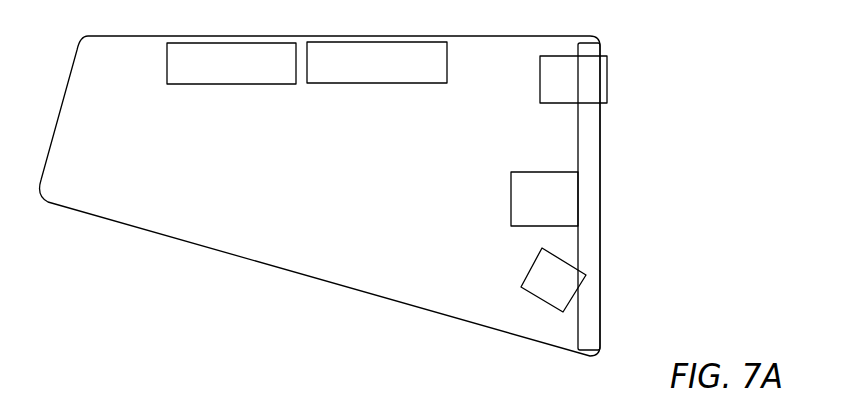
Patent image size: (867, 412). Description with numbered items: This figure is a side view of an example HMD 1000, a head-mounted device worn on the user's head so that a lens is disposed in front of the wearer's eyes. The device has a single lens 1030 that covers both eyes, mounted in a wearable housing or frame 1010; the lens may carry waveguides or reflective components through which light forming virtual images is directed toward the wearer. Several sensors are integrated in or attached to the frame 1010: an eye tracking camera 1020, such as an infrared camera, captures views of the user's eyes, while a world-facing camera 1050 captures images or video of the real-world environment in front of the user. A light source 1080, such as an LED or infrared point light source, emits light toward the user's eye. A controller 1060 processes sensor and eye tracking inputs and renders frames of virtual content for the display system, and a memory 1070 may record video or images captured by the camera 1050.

The HMD 1000 is at (695, 70).
The frame 1010 is at (135, 75).
The eye tracking camera 1020 is at (570, 210).
The lens 1030 is at (593, 312).
The world-facing camera 1050 is at (596, 88).
The controller 1060 is at (403, 73).
The memory 1070 is at (257, 73).
The light source 1080 is at (577, 290).